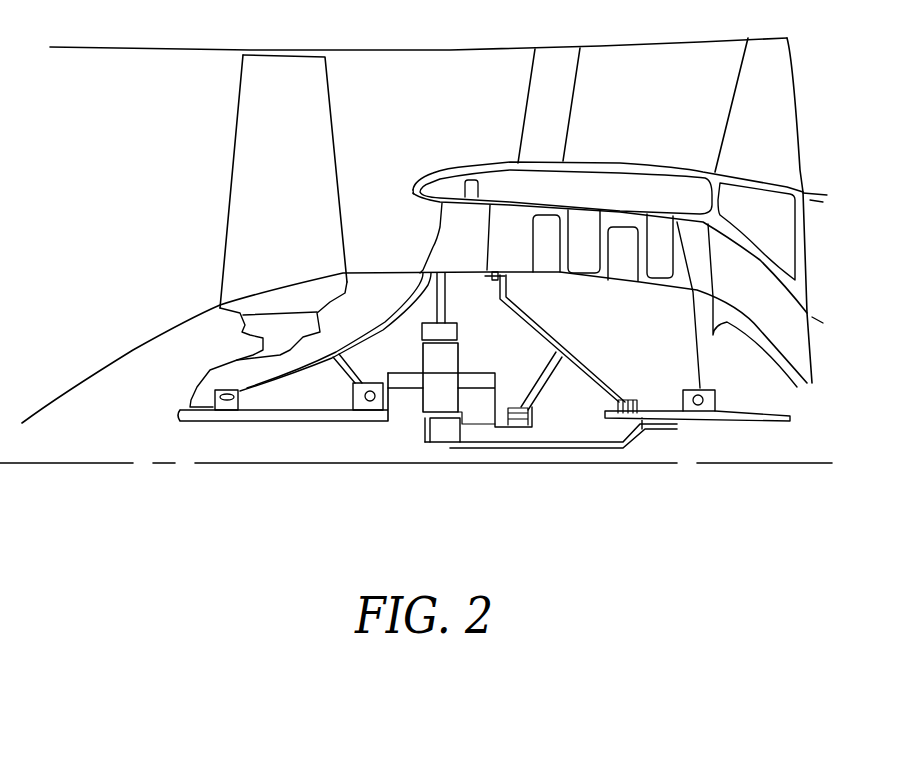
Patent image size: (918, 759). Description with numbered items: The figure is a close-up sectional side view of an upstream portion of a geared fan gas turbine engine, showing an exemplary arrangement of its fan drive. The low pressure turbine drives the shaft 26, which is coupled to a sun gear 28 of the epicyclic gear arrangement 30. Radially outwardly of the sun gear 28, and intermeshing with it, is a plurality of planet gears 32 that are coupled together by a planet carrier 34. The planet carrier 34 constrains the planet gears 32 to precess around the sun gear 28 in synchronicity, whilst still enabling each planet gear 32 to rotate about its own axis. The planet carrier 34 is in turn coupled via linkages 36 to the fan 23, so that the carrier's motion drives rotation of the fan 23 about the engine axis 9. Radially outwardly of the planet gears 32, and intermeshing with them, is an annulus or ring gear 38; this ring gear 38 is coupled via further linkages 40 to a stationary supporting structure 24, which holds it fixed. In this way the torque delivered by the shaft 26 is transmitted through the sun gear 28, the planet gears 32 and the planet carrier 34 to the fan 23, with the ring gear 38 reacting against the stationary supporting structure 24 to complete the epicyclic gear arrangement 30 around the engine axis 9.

The engine axis 9 is at (116, 465).
The fan 23 is at (258, 180).
The stationary supporting structure 24 is at (445, 230).
The shaft 26 is at (698, 427).
The sun gear 28 is at (442, 430).
The epicyclic gear arrangement 30 is at (410, 415).
The planet gears 32 is at (432, 402).
The planet carrier 34 is at (485, 410).
The linkages 36 is at (400, 408).
The ring gear 38 is at (447, 332).
The linkages 40 is at (445, 303).